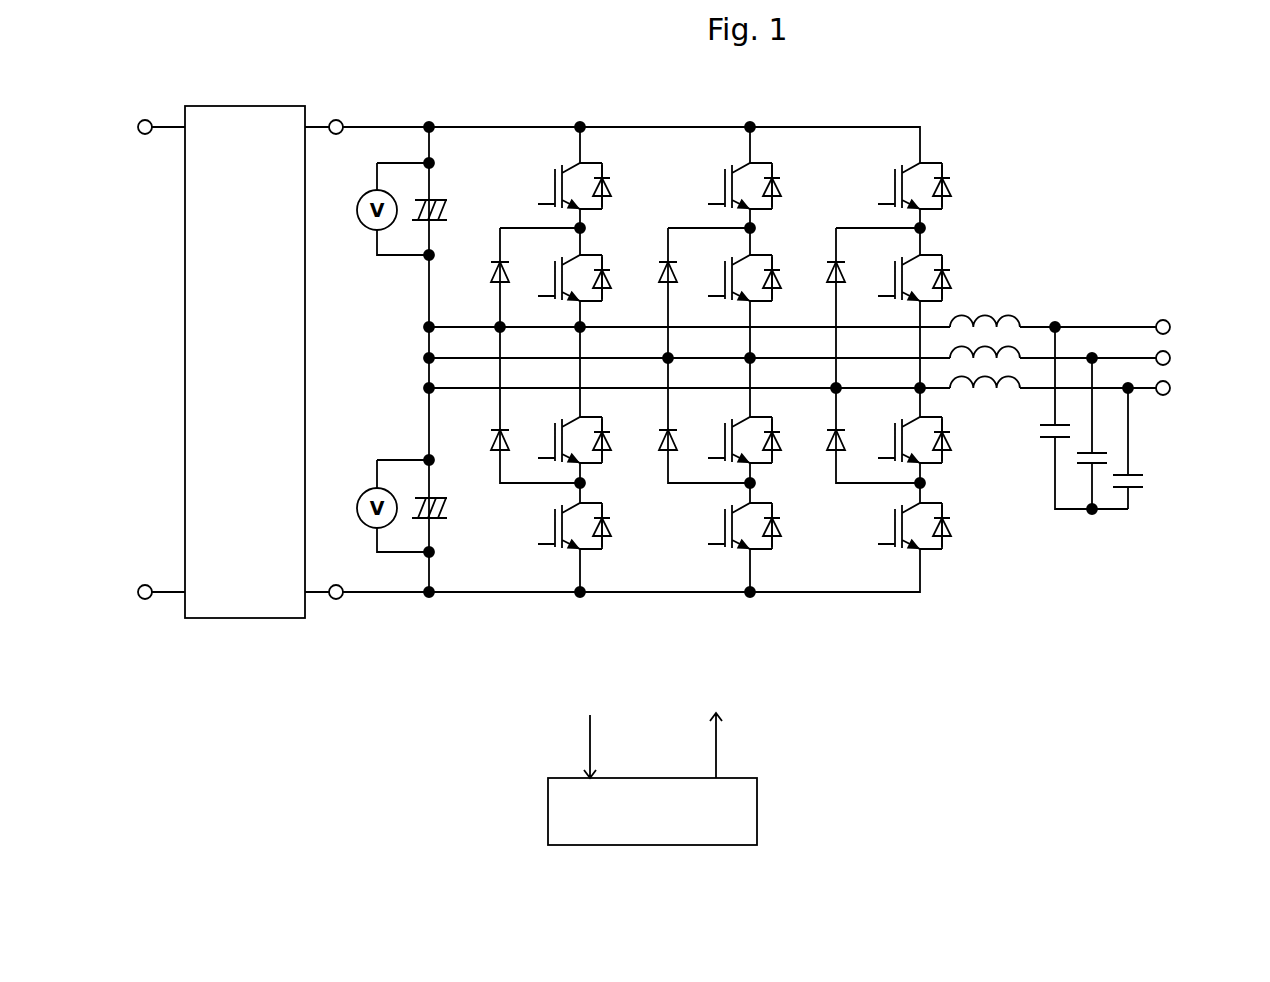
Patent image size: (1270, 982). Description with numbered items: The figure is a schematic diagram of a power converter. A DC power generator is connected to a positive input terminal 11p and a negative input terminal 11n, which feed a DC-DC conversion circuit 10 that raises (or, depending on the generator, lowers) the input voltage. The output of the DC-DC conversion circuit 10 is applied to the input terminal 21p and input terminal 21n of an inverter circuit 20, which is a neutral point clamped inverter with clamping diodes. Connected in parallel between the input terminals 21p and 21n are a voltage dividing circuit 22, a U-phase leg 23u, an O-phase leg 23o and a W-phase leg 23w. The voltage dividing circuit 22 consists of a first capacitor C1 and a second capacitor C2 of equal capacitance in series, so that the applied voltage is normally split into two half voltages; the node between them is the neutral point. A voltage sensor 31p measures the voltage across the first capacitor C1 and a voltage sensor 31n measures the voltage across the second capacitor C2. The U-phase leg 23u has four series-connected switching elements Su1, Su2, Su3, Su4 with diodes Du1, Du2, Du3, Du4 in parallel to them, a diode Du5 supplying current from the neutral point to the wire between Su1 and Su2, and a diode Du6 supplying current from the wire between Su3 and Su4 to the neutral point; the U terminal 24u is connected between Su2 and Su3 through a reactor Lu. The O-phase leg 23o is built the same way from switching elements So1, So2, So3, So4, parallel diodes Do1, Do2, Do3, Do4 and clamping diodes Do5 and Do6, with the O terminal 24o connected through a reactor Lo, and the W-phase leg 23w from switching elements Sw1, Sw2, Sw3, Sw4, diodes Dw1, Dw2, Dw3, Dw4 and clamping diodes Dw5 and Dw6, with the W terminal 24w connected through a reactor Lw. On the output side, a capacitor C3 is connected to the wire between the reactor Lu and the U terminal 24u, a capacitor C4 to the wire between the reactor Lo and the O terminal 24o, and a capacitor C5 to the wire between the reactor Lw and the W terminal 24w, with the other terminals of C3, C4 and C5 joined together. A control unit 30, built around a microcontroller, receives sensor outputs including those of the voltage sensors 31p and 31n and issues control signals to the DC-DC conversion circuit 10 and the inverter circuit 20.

The DC-DC conversion circuit 10 is at (257, 106).
The input terminal 11p is at (145, 120).
The input terminal 11n is at (145, 585).
The inverter circuit 20 is at (985, 101).
The input terminal 21p is at (336, 120).
The input terminal 21n is at (336, 599).
The voltage dividing circuit 22 is at (450, 610).
The U-phase leg 23u is at (620, 610).
The O-phase leg 23o is at (795, 610).
The W-phase leg 23w is at (968, 610).
The U terminal 24u is at (1171, 326).
The O terminal 24o is at (1171, 357).
The W terminal 24w is at (1171, 387).
The control unit 30 is at (742, 778).
The voltage sensor 31p is at (366, 228).
The voltage sensor 31n is at (364, 528).
The first capacitor C1 is at (447, 200).
The second capacitor C2 is at (447, 499).
The capacitor C3 is at (1046, 440).
The capacitor C4 is at (1108, 451).
The capacitor C5 is at (1132, 478).
The switching element Su1 is at (553, 179).
The switching element Su2 is at (553, 271).
The switching element Su3 is at (553, 433).
The switching element Su4 is at (553, 525).
The switching element So1 is at (723, 179).
The switching element So2 is at (723, 271).
The switching element So3 is at (723, 433).
The switching element So4 is at (723, 525).
The switching element Sw1 is at (893, 179).
The switching element Sw2 is at (893, 271).
The switching element Sw3 is at (893, 433).
The switching element Sw4 is at (893, 525).
The diode Du1 is at (607, 181).
The diode Du2 is at (607, 273).
The diode Du3 is at (607, 435).
The diode Du4 is at (607, 525).
The diode Du5 is at (493, 268).
The diode Du6 is at (493, 436).
The diode Do1 is at (777, 181).
The diode Do2 is at (777, 273).
The diode Do3 is at (777, 435).
The diode Do4 is at (777, 525).
The diode Do5 is at (665, 288).
The diode Do6 is at (665, 455).
The diode Dw1 is at (947, 181).
The diode Dw2 is at (947, 273).
The diode Dw3 is at (947, 445).
The diode Dw4 is at (947, 525).
The diode Dw5 is at (833, 288).
The diode Dw6 is at (833, 455).
The reactor Lu is at (1018, 316).
The reactor Lo is at (994, 347).
The reactor Lw is at (997, 395).